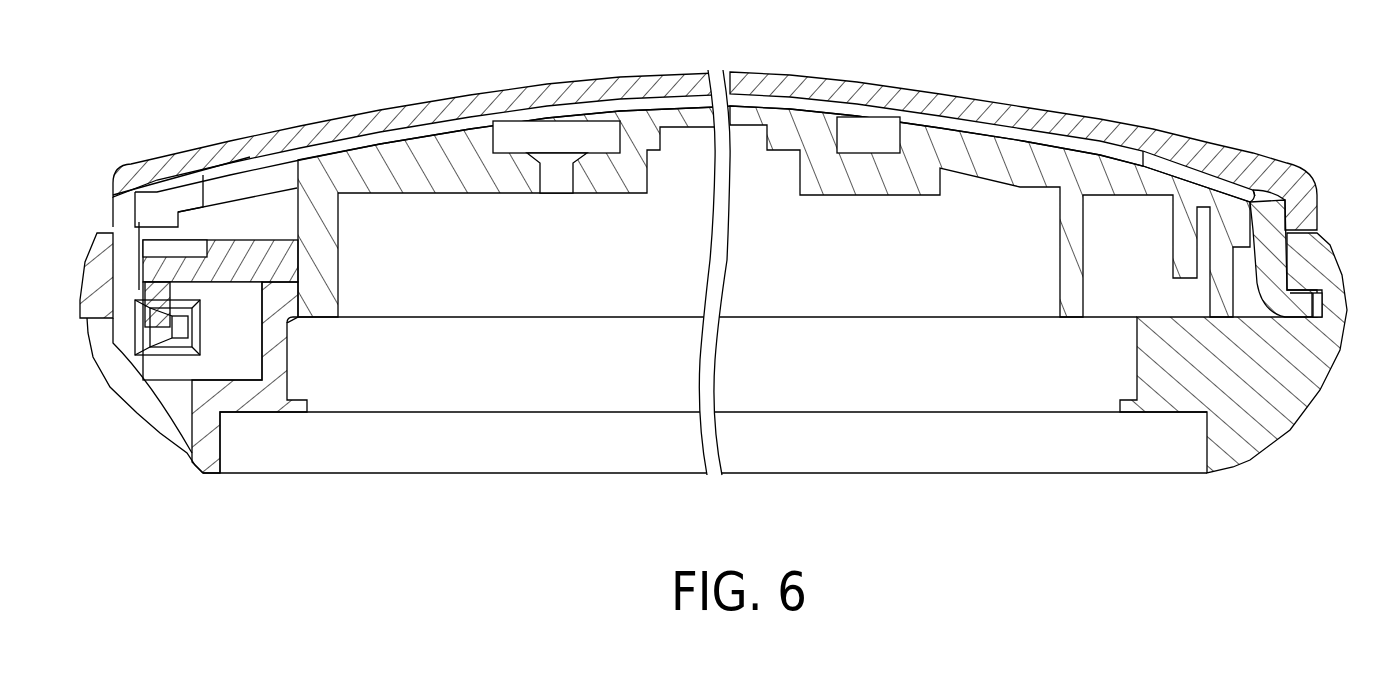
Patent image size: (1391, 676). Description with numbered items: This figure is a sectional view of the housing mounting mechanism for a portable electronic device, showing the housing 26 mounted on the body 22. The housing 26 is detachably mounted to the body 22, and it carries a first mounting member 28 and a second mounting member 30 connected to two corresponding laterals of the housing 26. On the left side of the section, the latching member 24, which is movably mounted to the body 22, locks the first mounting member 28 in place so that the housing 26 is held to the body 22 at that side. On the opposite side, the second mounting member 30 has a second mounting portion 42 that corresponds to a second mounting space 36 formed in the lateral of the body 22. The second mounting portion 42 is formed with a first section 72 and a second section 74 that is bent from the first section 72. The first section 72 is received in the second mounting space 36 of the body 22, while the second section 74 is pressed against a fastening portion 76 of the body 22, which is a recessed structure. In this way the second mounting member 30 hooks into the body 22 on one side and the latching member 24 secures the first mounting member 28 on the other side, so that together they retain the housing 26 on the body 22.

The body 22 is at (891, 492).
The latching member 24 is at (220, 236).
The housing 26 is at (746, 66).
The first mounting member 28 is at (146, 276).
The second mounting member 30 is at (1245, 167).
The second mounting space 36 is at (1250, 282).
The second mounting portion 42 is at (1203, 178).
The first section 72 is at (1273, 231).
The second section 74 is at (1297, 305).
The fastening portion 76 is at (1323, 309).